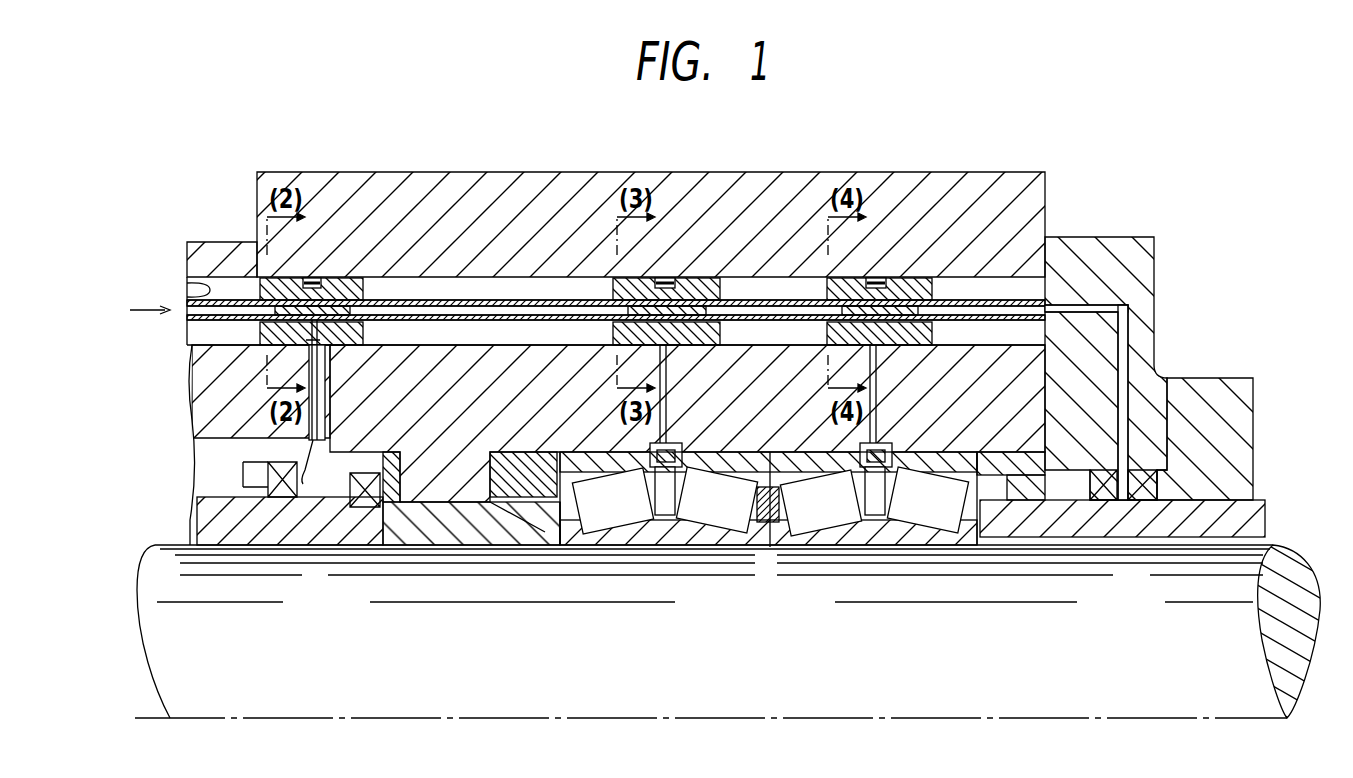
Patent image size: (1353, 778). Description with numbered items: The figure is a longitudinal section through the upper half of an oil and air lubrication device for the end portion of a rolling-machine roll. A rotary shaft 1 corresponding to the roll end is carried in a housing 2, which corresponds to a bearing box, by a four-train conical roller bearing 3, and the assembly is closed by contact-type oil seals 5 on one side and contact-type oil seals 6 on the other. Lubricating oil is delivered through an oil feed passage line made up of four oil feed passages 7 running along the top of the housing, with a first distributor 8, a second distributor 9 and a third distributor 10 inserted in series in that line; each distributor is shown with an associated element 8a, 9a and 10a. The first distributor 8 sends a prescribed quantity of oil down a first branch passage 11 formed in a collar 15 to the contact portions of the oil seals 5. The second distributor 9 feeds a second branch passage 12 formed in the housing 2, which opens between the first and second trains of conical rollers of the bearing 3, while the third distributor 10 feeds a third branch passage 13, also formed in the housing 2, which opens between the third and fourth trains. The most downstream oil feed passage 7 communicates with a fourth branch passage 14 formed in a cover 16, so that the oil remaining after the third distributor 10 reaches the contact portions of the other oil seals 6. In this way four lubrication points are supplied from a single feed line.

The rotary shaft 1 is at (782, 705).
The housing 2 is at (712, 312).
The four-train conical roller bearing 3 is at (766, 552).
The contact-type oil seal 5 is at (365, 508).
The contact-type oil seal 6 is at (1145, 502).
The oil feed passage 7 is at (197, 292).
The first distributor 8 is at (326, 237).
The sensor contact 8a is at (321, 209).
The second distributor 9 is at (666, 237).
The sensor contact 9a is at (663, 209).
The third distributor 10 is at (883, 238).
The sensor contact 10a is at (877, 209).
The first branch passage 11 is at (347, 402).
The second branch passage 12 is at (688, 430).
The third branch passage 13 is at (905, 430).
The fourth branch passage 14 is at (1122, 402).
The collar 15 is at (200, 374).
The cover 16 is at (1230, 380).